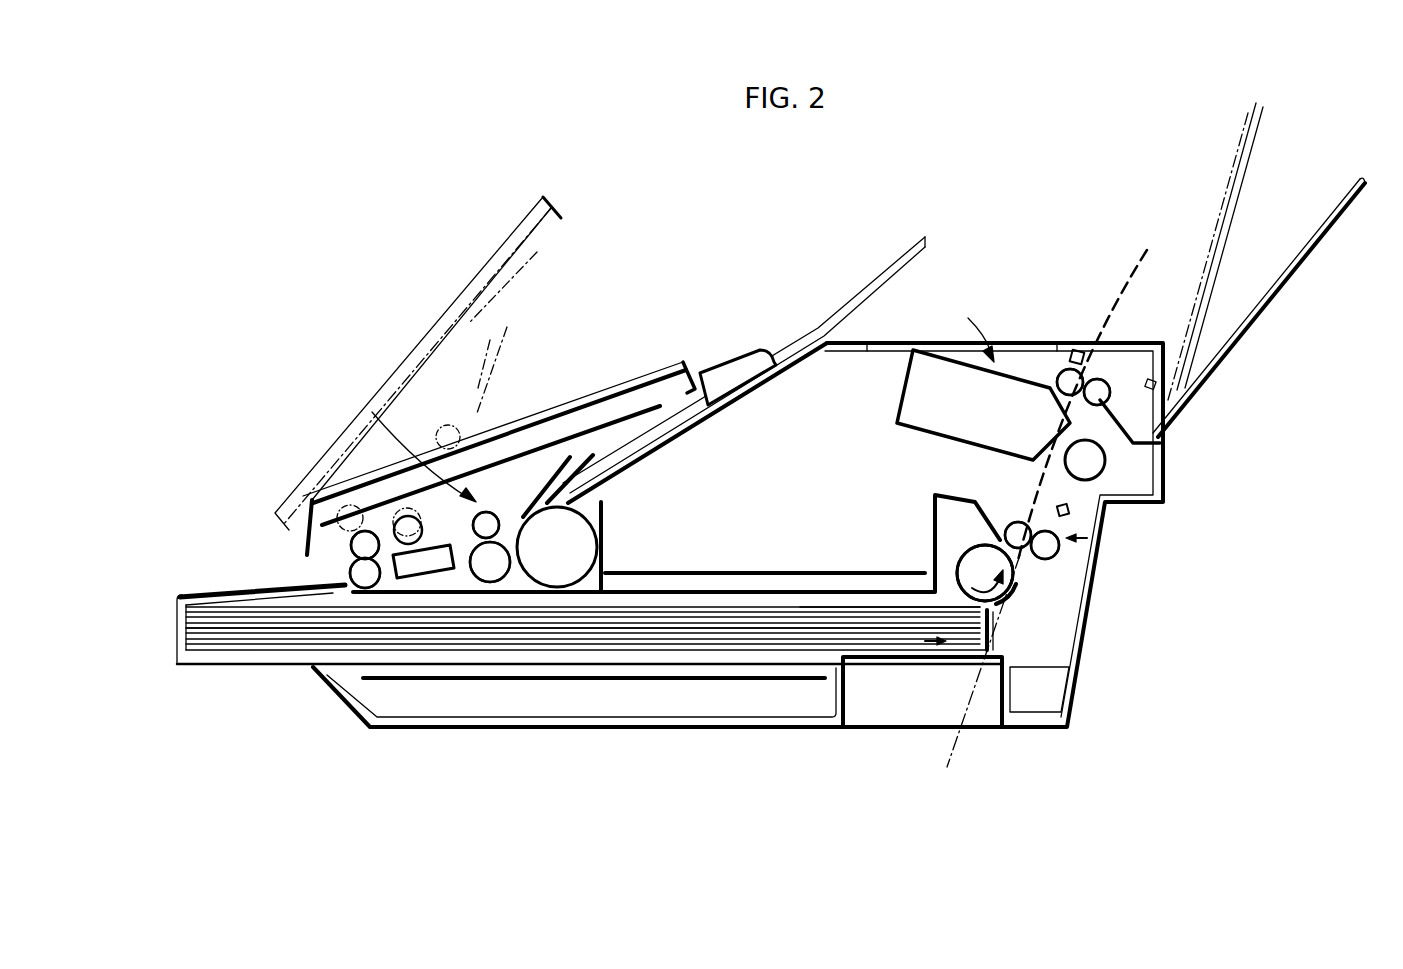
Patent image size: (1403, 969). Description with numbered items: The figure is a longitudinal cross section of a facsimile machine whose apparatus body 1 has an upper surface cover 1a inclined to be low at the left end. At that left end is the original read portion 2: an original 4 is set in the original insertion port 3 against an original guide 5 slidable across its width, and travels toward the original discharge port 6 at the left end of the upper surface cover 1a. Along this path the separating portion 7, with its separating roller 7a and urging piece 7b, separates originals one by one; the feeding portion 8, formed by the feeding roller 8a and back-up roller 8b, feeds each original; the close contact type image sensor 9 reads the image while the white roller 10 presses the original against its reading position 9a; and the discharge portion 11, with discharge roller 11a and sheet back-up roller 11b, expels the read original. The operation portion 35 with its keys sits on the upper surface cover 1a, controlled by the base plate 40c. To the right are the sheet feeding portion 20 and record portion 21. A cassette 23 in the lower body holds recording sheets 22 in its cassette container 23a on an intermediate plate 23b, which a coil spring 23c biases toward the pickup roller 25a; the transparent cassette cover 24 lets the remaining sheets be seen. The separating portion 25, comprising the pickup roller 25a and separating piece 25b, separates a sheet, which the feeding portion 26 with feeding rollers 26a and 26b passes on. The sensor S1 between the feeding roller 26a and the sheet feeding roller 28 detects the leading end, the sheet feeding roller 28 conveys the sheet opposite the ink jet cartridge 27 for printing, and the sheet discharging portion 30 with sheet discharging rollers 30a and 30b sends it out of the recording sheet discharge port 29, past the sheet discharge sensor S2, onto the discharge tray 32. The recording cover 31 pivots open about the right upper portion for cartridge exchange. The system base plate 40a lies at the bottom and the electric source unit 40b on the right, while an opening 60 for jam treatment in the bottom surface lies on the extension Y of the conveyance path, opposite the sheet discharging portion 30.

The apparatus body 1 is at (727, 723).
The upper surface cover 1a is at (663, 375).
The original read portion 2 is at (402, 509).
The original insertion port 3 is at (697, 372).
The original 4 is at (867, 283).
The original guide 5 is at (752, 352).
The original discharge port 6 is at (323, 571).
The separating portion 7 is at (556, 772).
The separating roller 7a is at (578, 572).
The urging piece 7b is at (548, 588).
The feeding portion 8 is at (585, 366).
The feeding roller 8a is at (506, 546).
The back-up roller 8b is at (489, 512).
The close contact type image sensor 9 is at (437, 567).
The reading position 9a is at (408, 545).
The white roller 10 is at (348, 505).
The discharge portion 11 is at (326, 712).
The discharge roller 11a is at (362, 588).
The sheet back-up roller 11b is at (355, 556).
The sheet feeding portion 20 is at (1087, 540).
The record portion 21 is at (969, 325).
The recording sheets 22 is at (673, 628).
The cassette 23 is at (168, 637).
The cassette container 23a is at (500, 648).
The intermediate plate 23b is at (830, 645).
The coil spring 23c is at (940, 650).
The cassette cover 24 is at (210, 596).
The separating portion 25 is at (993, 772).
The pickup roller 25a is at (983, 600).
The separating piece 25b is at (1022, 600).
The feeding portion 26 is at (1166, 576).
The feeding roller 26a is at (1050, 559).
The feeding roller 26b is at (1022, 548).
The ink jet cartridge 27 is at (898, 402).
The sheet feeding roller 28 is at (1068, 466).
The recording sheet discharge port 29 is at (1085, 338).
The sheet discharging portion 30 is at (1290, 366).
The sheet discharging roller 30a is at (1106, 400).
The sheet discharging roller 30b is at (1083, 374).
The recording cover 31 is at (1027, 345).
The discharge tray 32 is at (1318, 248).
The operation portion 35 is at (450, 426).
The system base plate 40a is at (675, 682).
The electric source unit 40b is at (820, 573).
The base plate for controlling the operation portion 40c is at (612, 418).
The opening for jam treatment 60 is at (873, 712).
The recording sheet leading end detecting sensor S1 is at (1070, 514).
The sheet discharge sensor S2 is at (1075, 349).
The extension of the conveyance path Y is at (971, 679).